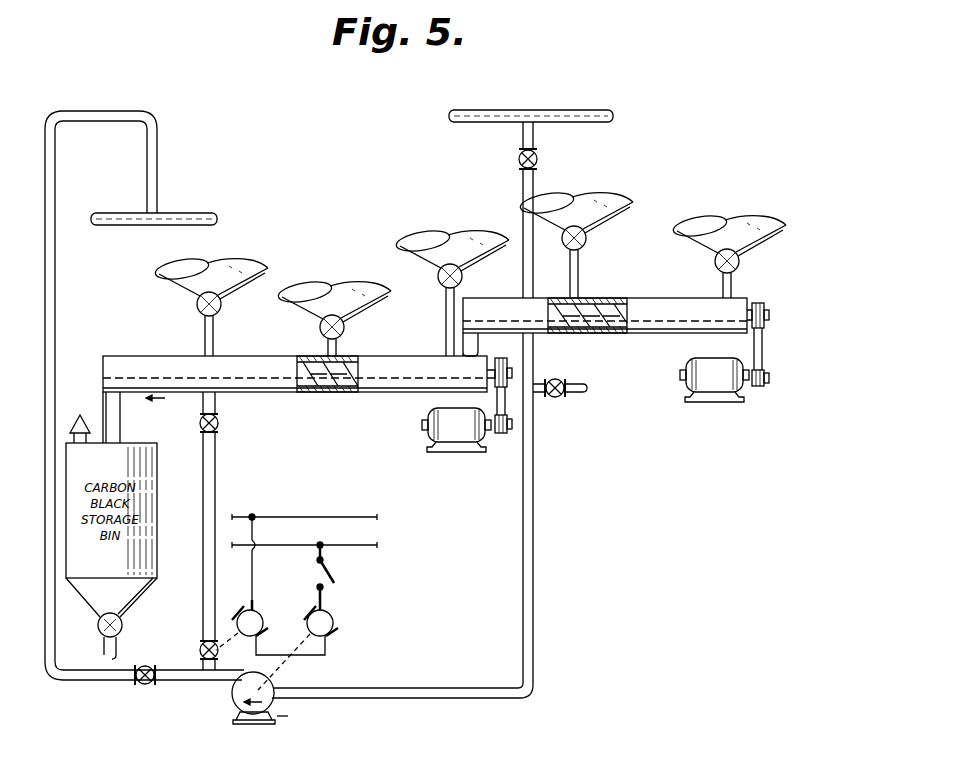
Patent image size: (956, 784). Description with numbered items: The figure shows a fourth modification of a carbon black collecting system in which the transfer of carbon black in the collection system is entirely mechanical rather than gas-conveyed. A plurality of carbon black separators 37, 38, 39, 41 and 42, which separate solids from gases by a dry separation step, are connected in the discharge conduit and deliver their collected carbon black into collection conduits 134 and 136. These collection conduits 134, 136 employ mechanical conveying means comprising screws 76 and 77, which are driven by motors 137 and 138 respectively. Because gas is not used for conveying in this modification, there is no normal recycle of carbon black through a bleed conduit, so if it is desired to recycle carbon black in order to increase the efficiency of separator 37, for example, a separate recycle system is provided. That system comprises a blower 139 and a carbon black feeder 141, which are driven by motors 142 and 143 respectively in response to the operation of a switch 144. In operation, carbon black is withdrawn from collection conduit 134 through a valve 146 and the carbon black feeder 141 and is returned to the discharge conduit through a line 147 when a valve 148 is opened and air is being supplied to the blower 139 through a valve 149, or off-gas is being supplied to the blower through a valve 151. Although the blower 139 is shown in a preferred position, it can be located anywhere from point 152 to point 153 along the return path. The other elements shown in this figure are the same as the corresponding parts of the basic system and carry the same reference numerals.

The carbon black separator 37 is at (270, 257).
The carbon black separator 38 is at (352, 293).
The carbon black separator 39 is at (490, 222).
The carbon black separator 41 is at (600, 210).
The carbon black separator 42 is at (760, 230).
The screw 76 is at (312, 392).
The screw 77 is at (600, 334).
The collection conduit 134 is at (158, 343).
The collection conduit 136 is at (622, 297).
The motor 137 is at (446, 453).
The motor 138 is at (706, 408).
The blower 139 is at (258, 724).
The carbon black feeder 141 is at (198, 650).
The motor 142 is at (336, 617).
The motor 143 is at (258, 611).
The switch 144 is at (334, 572).
The valve 146 is at (221, 423).
The line 147 is at (57, 279).
The valve 148 is at (142, 686).
The valve 149 is at (556, 398).
The valve 151 is at (539, 164).
The point 152 is at (566, 111).
The point 153 is at (187, 212).